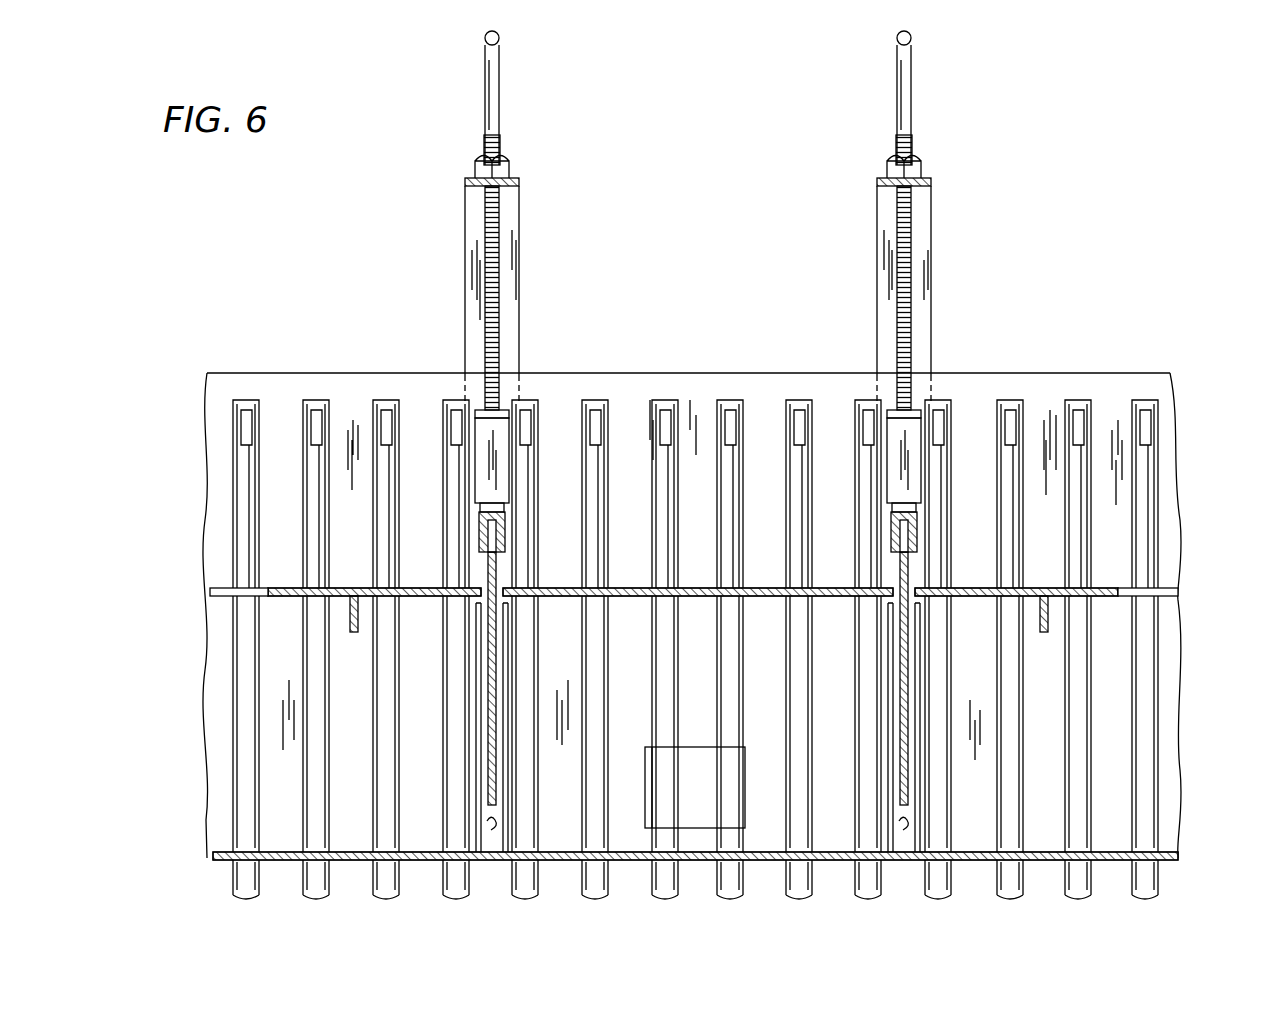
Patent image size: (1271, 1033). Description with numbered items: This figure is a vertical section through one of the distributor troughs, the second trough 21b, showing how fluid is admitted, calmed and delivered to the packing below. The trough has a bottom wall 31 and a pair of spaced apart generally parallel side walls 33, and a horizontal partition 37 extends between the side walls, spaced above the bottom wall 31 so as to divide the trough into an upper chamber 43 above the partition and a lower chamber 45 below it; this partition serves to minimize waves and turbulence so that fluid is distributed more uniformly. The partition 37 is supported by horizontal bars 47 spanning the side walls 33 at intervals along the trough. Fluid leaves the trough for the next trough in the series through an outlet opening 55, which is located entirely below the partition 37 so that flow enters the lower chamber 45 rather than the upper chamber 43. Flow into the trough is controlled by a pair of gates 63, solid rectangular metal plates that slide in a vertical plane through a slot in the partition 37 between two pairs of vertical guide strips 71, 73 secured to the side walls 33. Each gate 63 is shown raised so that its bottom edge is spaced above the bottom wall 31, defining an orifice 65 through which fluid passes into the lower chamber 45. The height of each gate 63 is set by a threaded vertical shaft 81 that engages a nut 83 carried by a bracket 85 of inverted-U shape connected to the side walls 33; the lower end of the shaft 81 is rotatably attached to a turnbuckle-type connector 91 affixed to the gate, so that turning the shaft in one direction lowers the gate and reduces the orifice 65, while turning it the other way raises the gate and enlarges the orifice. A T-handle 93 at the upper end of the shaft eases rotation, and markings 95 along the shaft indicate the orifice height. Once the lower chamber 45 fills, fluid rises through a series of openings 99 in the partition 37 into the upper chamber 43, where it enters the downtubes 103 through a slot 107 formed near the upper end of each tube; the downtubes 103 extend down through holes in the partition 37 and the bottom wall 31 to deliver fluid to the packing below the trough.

The second trough 21b is at (715, 591).
The bottom wall 31 is at (1165, 853).
The side walls 33 is at (550, 373).
The horizontal partition 37 is at (1105, 595).
The upper chamber 43 is at (1108, 403).
The lower chamber 45 is at (1108, 765).
The horizontal bars 47 is at (350, 615).
The outlet opening 55 is at (695, 752).
The gate 63 is at (496, 567).
The orifice 65 is at (490, 830).
The vertical guide strips 71 is at (476, 666).
The vertical guide strips 73 is at (506, 652).
The threaded vertical shaft 81 is at (499, 305).
The nut 83 is at (512, 165).
The bracket 85 is at (520, 240).
The turnbuckle-type connector 91 is at (498, 470).
The T-handle 93 is at (499, 38).
The markings 95 is at (484, 138).
The openings 99 is at (225, 590).
The downtubes 103 is at (316, 400).
The slot 107 is at (247, 412).